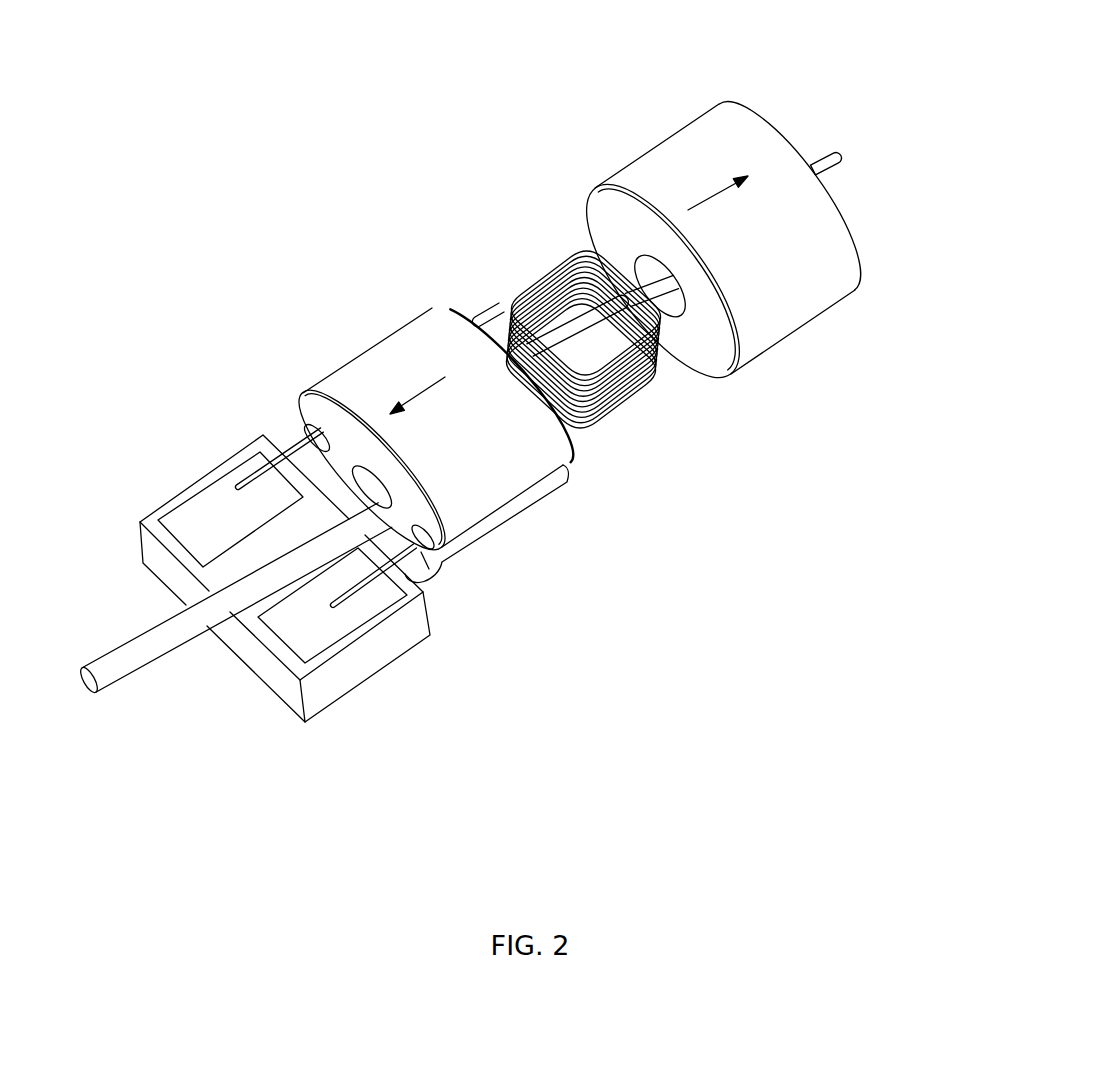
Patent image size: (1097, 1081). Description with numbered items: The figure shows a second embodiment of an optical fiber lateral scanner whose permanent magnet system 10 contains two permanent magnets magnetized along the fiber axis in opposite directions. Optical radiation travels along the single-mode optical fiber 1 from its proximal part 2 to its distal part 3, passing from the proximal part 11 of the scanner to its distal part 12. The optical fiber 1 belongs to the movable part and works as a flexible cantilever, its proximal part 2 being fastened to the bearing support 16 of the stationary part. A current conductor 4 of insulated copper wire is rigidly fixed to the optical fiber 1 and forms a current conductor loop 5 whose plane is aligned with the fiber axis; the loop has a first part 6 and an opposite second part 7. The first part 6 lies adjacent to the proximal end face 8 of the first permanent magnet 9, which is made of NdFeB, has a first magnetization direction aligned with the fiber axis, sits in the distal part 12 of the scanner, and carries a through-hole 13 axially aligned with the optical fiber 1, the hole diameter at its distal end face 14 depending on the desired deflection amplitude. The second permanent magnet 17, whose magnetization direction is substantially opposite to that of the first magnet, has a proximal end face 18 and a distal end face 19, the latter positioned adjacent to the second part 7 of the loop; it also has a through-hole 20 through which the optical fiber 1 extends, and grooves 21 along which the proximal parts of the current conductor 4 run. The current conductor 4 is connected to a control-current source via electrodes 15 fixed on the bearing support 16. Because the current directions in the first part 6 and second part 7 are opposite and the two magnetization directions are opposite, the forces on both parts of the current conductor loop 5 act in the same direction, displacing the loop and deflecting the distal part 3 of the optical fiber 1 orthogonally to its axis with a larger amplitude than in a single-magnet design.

The optical fiber 1 is at (269, 552).
The proximal part 2 is at (250, 562).
The distal part 3 is at (832, 153).
The current conductor 4 is at (486, 307).
The current conductor loop 5 is at (545, 265).
The first part 6 is at (630, 320).
The second part 7 is at (565, 453).
The proximal end face 8 is at (618, 217).
The first permanent magnet 9 is at (793, 268).
The permanent magnet system 10 is at (461, 440).
The proximal part 11 is at (231, 630).
The distal part 12 is at (859, 131).
The through-hole 13 is at (656, 268).
The distal end face 14 is at (721, 207).
The electrodes 15 is at (200, 500).
The bearing support 16 is at (390, 632).
The second permanent magnet 17 is at (461, 440).
The proximal end face 18 is at (318, 410).
The distal end face 19 is at (428, 307).
The through-hole 20 is at (433, 583).
The grooves 21 is at (307, 437).